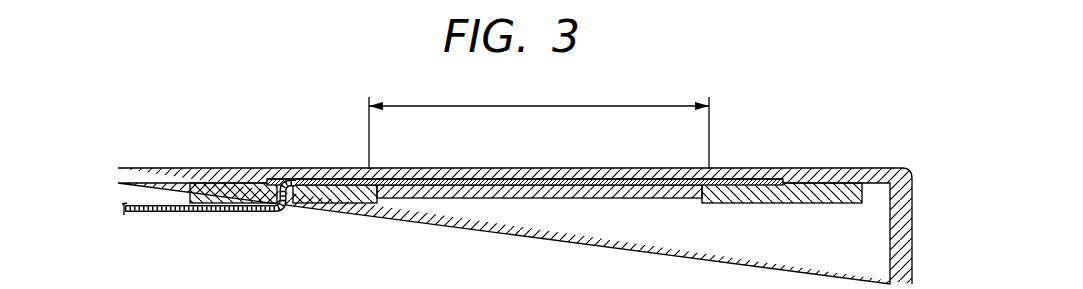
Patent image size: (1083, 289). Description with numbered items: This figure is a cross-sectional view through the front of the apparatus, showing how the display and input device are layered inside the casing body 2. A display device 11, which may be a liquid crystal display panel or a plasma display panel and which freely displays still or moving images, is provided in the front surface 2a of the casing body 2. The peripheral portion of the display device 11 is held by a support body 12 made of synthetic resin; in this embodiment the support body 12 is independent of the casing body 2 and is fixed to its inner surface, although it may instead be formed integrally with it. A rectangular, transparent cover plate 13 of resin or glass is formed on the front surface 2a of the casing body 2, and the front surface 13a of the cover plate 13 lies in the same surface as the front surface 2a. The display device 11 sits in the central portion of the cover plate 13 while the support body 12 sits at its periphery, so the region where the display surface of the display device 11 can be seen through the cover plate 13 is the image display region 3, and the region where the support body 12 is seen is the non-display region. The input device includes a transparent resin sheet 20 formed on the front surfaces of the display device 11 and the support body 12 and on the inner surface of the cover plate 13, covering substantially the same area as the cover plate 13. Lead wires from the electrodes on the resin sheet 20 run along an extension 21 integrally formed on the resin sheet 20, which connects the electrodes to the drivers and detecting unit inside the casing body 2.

The casing body 2 is at (912, 215).
The front surface of the casing body 2a is at (197, 168).
The image display region 3 is at (539, 125).
The display device 11 is at (547, 198).
The support body 12 is at (334, 203).
The cover plate 13 is at (650, 163).
The front surface of the cover plate 13a is at (505, 168).
The resin sheet 20 is at (457, 186).
The extension 21 is at (172, 213).